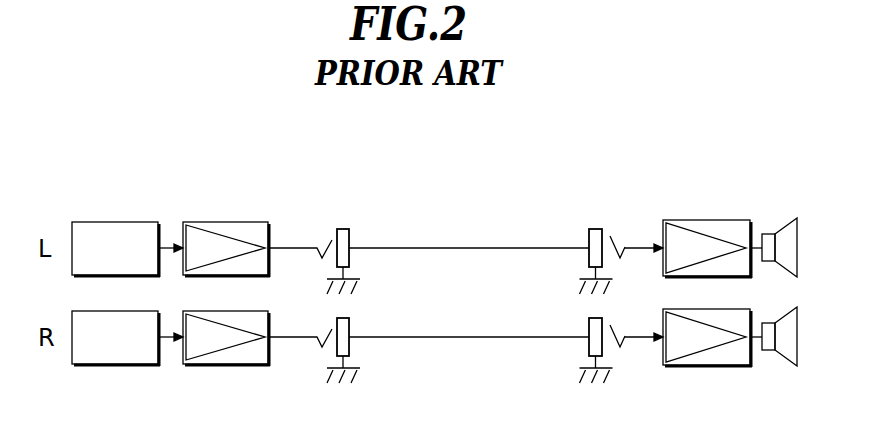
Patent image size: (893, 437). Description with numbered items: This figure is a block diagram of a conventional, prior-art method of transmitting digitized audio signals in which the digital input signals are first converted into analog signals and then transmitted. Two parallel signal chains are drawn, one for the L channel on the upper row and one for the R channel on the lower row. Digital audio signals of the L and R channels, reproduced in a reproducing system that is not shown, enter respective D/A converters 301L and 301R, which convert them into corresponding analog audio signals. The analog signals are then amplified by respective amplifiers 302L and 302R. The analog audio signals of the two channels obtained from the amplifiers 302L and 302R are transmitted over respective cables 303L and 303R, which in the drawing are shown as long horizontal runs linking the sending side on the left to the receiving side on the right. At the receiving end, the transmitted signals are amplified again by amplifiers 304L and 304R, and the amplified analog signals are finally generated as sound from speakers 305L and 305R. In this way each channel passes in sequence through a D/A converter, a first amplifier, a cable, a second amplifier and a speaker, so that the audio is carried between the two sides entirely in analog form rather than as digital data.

The D/A converter 301L is at (120, 222).
The amplifier 302L is at (230, 222).
The cable 303L is at (483, 247).
The amplifier 304L is at (710, 219).
The speaker 305L is at (787, 217).
The D/A converter 301R is at (120, 365).
The amplifier 302R is at (230, 365).
The cable 303R is at (483, 337).
The amplifier 304R is at (710, 365).
The speaker 305R is at (787, 367).